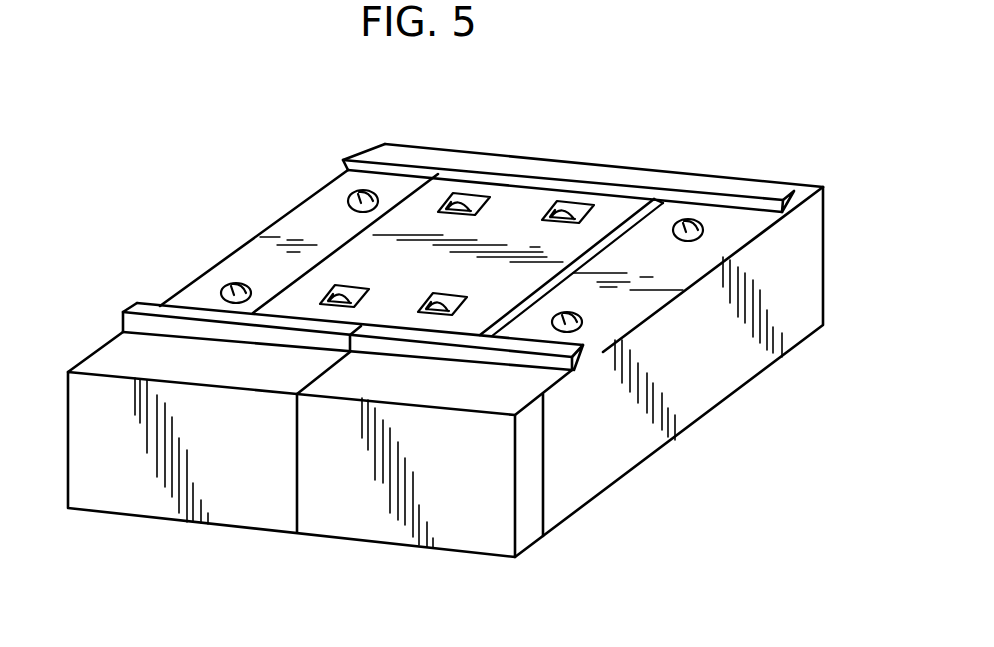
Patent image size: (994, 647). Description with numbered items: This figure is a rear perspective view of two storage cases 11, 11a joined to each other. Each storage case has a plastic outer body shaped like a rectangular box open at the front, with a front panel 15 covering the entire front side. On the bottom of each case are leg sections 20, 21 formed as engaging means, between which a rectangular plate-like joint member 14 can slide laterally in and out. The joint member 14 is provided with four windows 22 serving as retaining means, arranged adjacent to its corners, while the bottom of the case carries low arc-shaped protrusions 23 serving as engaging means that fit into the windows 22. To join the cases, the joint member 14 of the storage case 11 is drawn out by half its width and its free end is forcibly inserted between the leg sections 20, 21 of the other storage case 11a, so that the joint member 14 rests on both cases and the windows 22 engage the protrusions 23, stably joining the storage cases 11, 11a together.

The storage case 11 is at (246, 233).
The other storage case 11a is at (610, 489).
The joint member 14 is at (520, 197).
The front panel 15 is at (227, 498).
The leg section 20 is at (125, 311).
The leg section 21 is at (350, 160).
The window 22 is at (479, 197).
The protrusion 23 is at (462, 202).